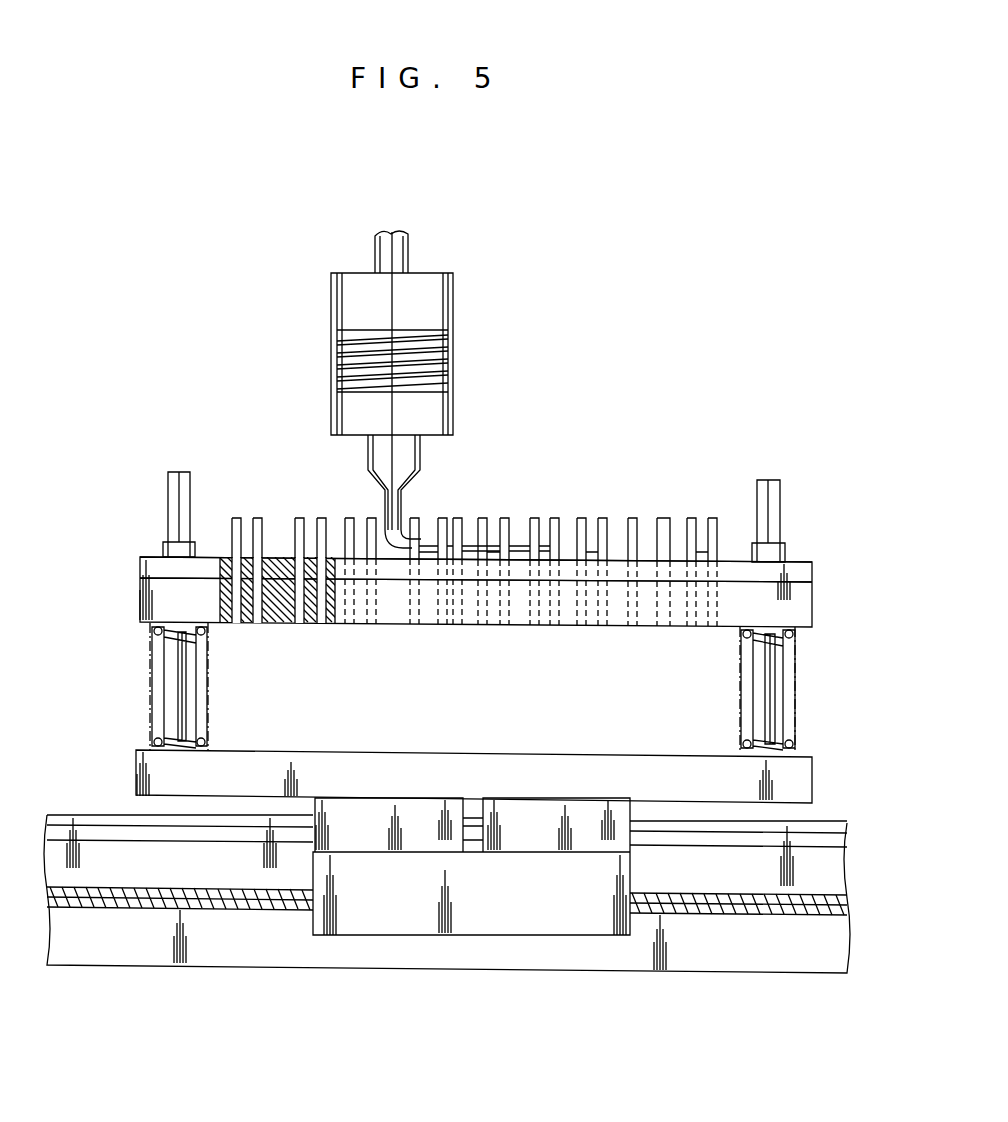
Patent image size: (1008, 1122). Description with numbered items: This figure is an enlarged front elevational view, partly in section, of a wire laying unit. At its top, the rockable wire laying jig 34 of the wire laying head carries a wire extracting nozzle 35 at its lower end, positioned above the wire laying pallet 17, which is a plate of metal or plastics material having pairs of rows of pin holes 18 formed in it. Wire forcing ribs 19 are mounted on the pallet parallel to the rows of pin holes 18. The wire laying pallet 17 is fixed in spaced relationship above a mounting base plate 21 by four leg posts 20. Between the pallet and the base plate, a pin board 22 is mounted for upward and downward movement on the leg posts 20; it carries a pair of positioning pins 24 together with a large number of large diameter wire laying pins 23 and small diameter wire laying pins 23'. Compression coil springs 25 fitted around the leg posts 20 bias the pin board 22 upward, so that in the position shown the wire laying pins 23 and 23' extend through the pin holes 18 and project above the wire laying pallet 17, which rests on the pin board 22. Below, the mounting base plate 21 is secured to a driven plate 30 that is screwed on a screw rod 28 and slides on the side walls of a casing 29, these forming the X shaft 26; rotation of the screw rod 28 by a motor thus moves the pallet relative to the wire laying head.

The wire laying pallet 17 is at (795, 577).
The pin holes 18 is at (225, 556).
The wire forcing ribs 19 is at (277, 555).
The leg posts 20 is at (168, 710).
The mounting base plate 21 is at (795, 781).
The pin board 22 is at (510, 550).
The large diameter wire laying pins 23 is at (494, 516).
The small diameter wire laying pins 23' is at (558, 516).
The positioning pins 24 is at (170, 500).
The compression coil springs 25 is at (150, 662).
The X shaft 26 is at (480, 930).
The screw rod 28 is at (700, 915).
The casing 29 is at (825, 869).
The driven plate 30 is at (545, 852).
The wire laying jig 34 is at (457, 293).
The wire extracting nozzle 35 is at (400, 497).